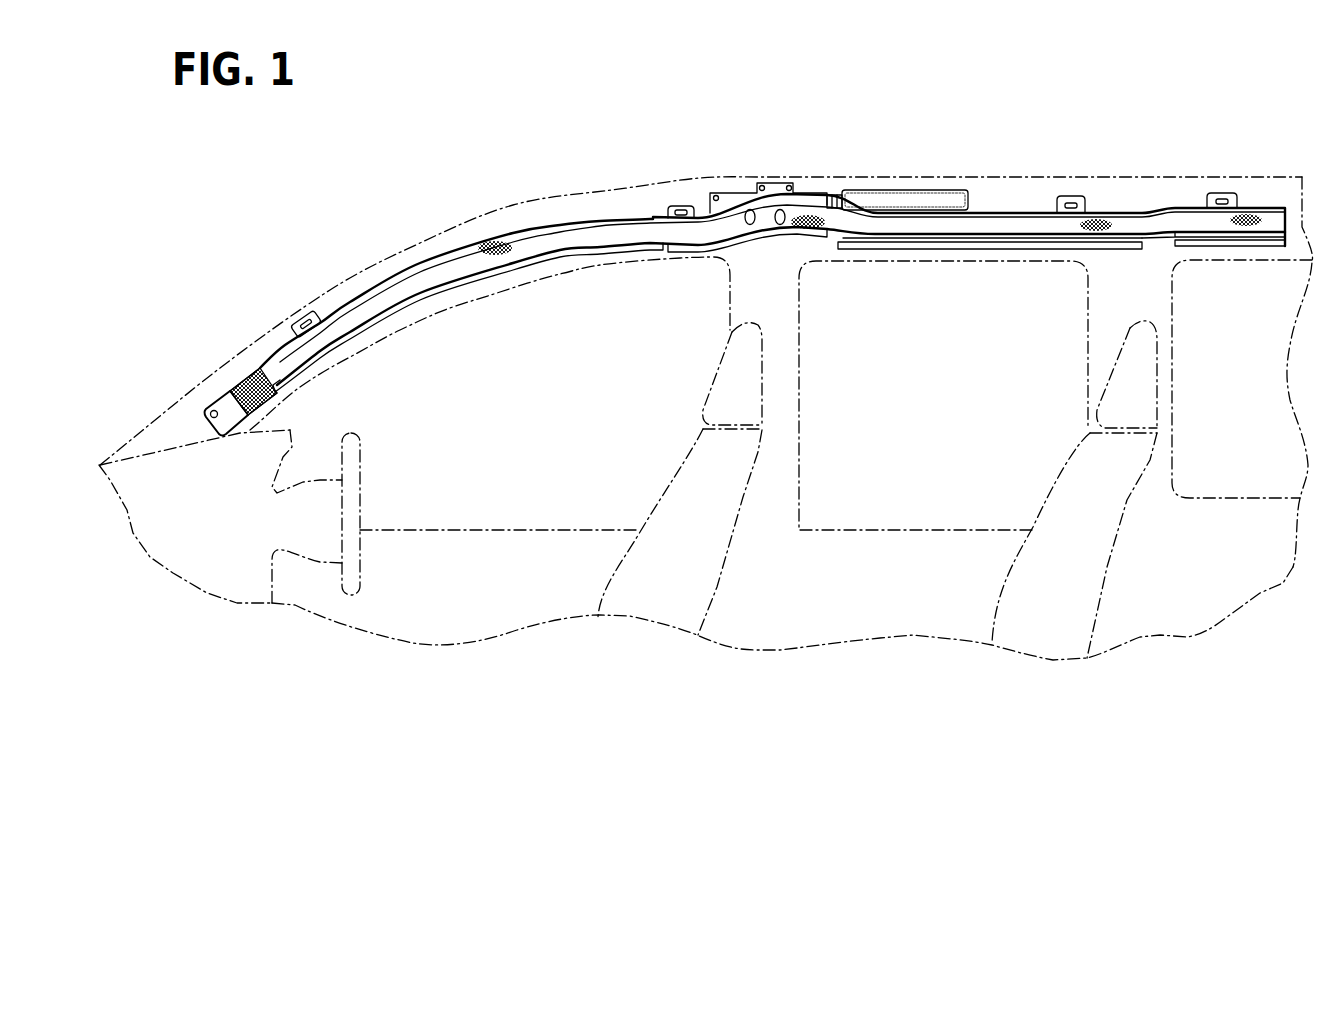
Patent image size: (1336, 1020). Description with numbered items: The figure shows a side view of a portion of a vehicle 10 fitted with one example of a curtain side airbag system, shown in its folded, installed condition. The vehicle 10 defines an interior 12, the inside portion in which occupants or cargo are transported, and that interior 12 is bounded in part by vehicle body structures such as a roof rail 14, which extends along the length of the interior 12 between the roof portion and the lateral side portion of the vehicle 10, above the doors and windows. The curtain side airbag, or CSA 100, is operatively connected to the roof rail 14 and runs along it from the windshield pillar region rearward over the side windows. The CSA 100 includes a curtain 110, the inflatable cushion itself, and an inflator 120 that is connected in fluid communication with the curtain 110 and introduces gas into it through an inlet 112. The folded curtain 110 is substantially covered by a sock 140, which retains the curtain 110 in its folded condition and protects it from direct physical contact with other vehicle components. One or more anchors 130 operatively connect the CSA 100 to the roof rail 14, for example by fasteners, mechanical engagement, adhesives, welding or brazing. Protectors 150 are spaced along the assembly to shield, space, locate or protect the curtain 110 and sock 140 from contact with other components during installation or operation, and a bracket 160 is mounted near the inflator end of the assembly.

The vehicle 10 is at (706, 400).
The interior 12 is at (474, 594).
The roof rail 14 is at (612, 195).
The curtain side airbag (CSA) 100 is at (745, 268).
The curtain 110 is at (1120, 226).
The inlet 112 is at (814, 200).
The inflator 120 is at (903, 198).
The anchor 130 is at (1070, 199).
The sock 140 is at (980, 228).
The protector 150 is at (423, 264).
The bracket 160 is at (727, 197).